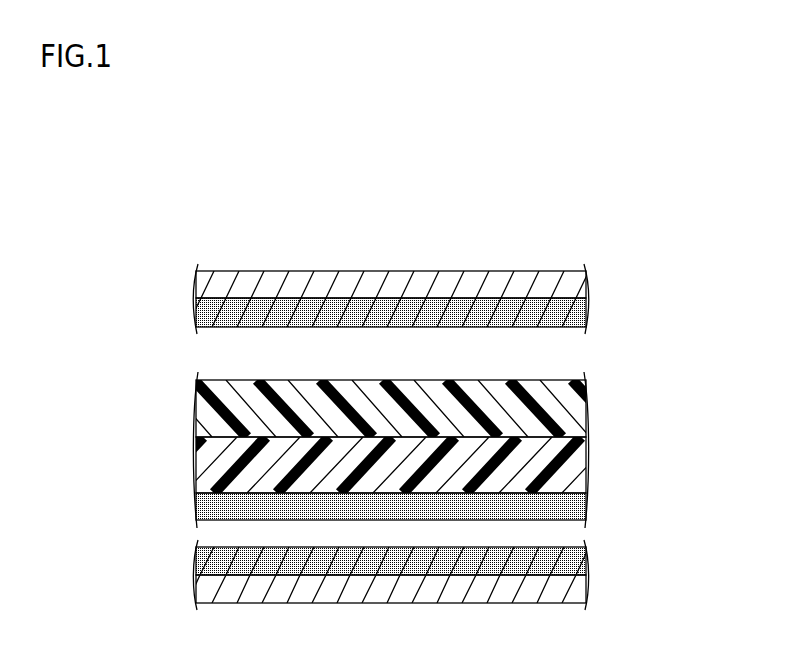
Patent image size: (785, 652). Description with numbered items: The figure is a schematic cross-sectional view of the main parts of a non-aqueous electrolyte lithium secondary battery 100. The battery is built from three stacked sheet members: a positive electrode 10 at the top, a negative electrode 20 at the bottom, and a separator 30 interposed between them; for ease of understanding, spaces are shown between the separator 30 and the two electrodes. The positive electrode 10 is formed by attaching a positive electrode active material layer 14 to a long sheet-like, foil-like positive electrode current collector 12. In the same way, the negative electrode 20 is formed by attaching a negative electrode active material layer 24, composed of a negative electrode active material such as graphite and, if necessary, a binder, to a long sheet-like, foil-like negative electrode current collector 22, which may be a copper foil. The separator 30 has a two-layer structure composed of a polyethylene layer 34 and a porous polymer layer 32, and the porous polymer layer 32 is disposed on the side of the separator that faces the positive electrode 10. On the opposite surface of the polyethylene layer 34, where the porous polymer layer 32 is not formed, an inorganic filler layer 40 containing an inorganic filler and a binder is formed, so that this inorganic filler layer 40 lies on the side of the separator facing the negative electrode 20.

The lithium secondary battery 100 is at (637, 185).
The positive electrode 10 is at (692, 265).
The positive electrode current collector 12 is at (580, 286).
The positive electrode active material layer 14 is at (578, 312).
The separator 30 is at (692, 385).
The porous polymer layer 32 is at (566, 411).
The polyethylene layer 34 is at (566, 462).
The inorganic filler layer 40 is at (572, 505).
The negative electrode 20 is at (692, 545).
The negative electrode active material layer 24 is at (580, 560).
The negative electrode current collector 22 is at (578, 589).